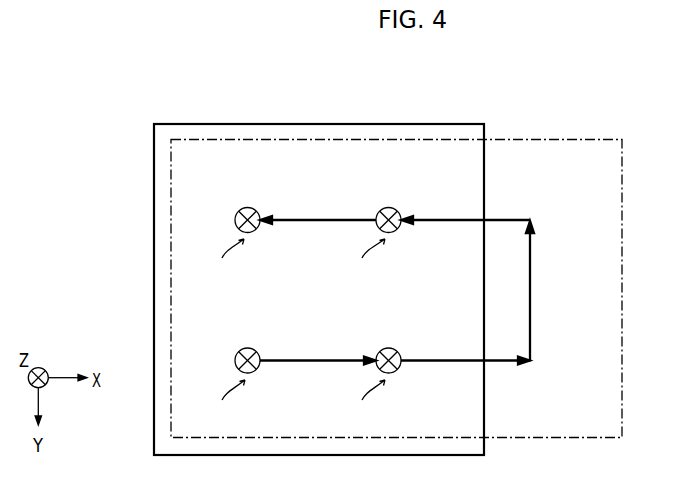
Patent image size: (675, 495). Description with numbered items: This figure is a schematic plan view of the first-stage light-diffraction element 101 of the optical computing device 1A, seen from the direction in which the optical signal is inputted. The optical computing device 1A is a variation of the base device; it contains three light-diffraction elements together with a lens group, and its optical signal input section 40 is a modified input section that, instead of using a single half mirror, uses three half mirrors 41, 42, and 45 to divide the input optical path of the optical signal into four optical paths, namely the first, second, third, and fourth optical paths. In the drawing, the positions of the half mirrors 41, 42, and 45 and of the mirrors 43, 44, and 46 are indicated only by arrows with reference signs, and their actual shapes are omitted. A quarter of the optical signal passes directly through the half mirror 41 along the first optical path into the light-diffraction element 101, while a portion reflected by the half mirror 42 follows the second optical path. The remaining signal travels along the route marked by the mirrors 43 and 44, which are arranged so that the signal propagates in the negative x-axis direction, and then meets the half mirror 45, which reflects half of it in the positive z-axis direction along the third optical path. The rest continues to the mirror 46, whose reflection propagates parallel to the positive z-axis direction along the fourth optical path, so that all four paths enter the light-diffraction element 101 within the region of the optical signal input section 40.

The optical computing device 1A is at (575, 67).
The light-diffraction element 101 is at (443, 124).
The optical signal input section 40 is at (558, 137).
The half mirror 41 is at (236, 344).
The half mirror 42 is at (378, 344).
The mirror 43 is at (546, 361).
The mirror 44 is at (547, 220).
The half mirror 45 is at (378, 204).
The mirror 46 is at (236, 204).